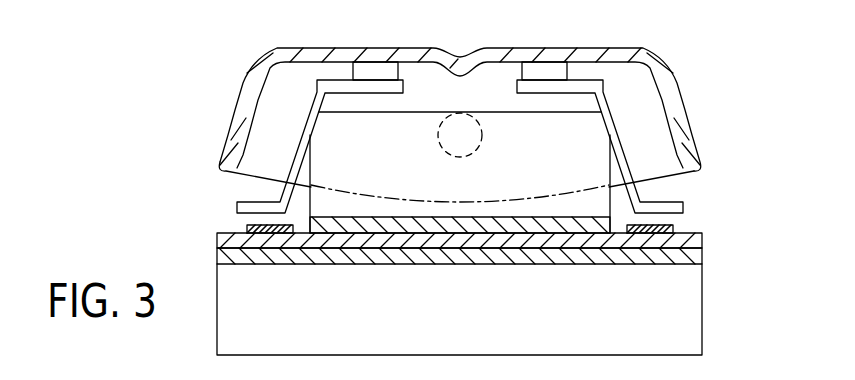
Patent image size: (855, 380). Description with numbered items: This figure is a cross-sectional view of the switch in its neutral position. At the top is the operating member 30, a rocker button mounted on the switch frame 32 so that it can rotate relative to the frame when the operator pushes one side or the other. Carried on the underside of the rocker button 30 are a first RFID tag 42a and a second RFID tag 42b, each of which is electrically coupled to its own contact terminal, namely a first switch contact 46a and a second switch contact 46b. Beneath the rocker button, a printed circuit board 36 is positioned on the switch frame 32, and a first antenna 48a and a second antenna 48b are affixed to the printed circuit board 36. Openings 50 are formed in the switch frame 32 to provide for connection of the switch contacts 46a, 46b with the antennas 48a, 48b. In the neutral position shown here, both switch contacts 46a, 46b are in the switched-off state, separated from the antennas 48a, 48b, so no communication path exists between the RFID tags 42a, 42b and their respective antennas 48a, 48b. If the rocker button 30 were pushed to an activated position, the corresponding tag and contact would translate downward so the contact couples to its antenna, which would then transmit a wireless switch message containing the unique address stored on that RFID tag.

The operating member 30 is at (243, 84).
The first RFID tag 42a is at (545, 72).
The second RFID tag 42b is at (375, 72).
The first switch contact 46a is at (548, 88).
The second switch contact 46b is at (343, 88).
The openings 50 is at (292, 215).
The first antenna 48a is at (660, 236).
The second antenna 48b is at (260, 236).
The printed circuit board 36 is at (397, 255).
The switch frame 32 is at (700, 238).